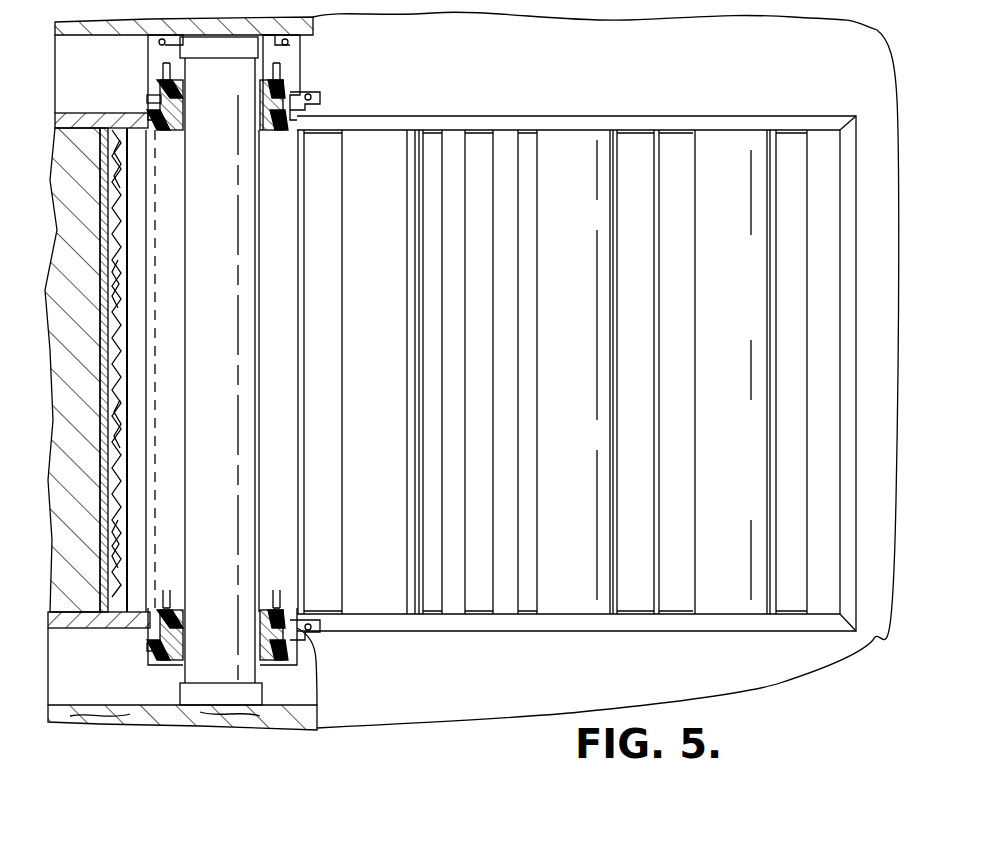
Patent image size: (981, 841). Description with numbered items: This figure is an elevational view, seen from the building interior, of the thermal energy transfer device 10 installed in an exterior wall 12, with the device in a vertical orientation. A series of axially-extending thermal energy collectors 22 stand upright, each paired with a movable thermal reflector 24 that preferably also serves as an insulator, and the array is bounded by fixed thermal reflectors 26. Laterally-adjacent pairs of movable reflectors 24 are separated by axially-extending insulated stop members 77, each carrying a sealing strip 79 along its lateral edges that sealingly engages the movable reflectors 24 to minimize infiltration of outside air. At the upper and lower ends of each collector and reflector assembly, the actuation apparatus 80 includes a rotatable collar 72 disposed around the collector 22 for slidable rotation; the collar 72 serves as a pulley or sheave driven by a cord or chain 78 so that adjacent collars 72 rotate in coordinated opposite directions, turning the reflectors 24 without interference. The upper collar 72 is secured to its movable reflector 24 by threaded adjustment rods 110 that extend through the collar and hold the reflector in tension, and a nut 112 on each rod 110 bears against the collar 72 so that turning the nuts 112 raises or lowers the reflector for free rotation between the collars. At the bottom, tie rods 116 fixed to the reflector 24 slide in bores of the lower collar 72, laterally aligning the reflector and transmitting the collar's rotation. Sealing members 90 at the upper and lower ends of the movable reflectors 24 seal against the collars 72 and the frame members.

The energy transfer device 10 is at (584, 124).
The exterior wall 12 is at (762, 79).
The thermal energy collector 22 is at (200, 234).
The movable thermal reflector 24 is at (162, 192).
The fixed thermal reflector 26 is at (142, 322).
The rotatable collar 72 is at (152, 106).
The insulated stop member 77 is at (481, 280).
The cord or chain 78 is at (320, 108).
The sealing strip 79 is at (456, 214).
The actuation apparatus 80 is at (330, 88).
The sealing member 90 is at (258, 143).
The adjustment rod 110 is at (266, 70).
The nut 112 is at (172, 73).
The tie rod 116 is at (256, 592).